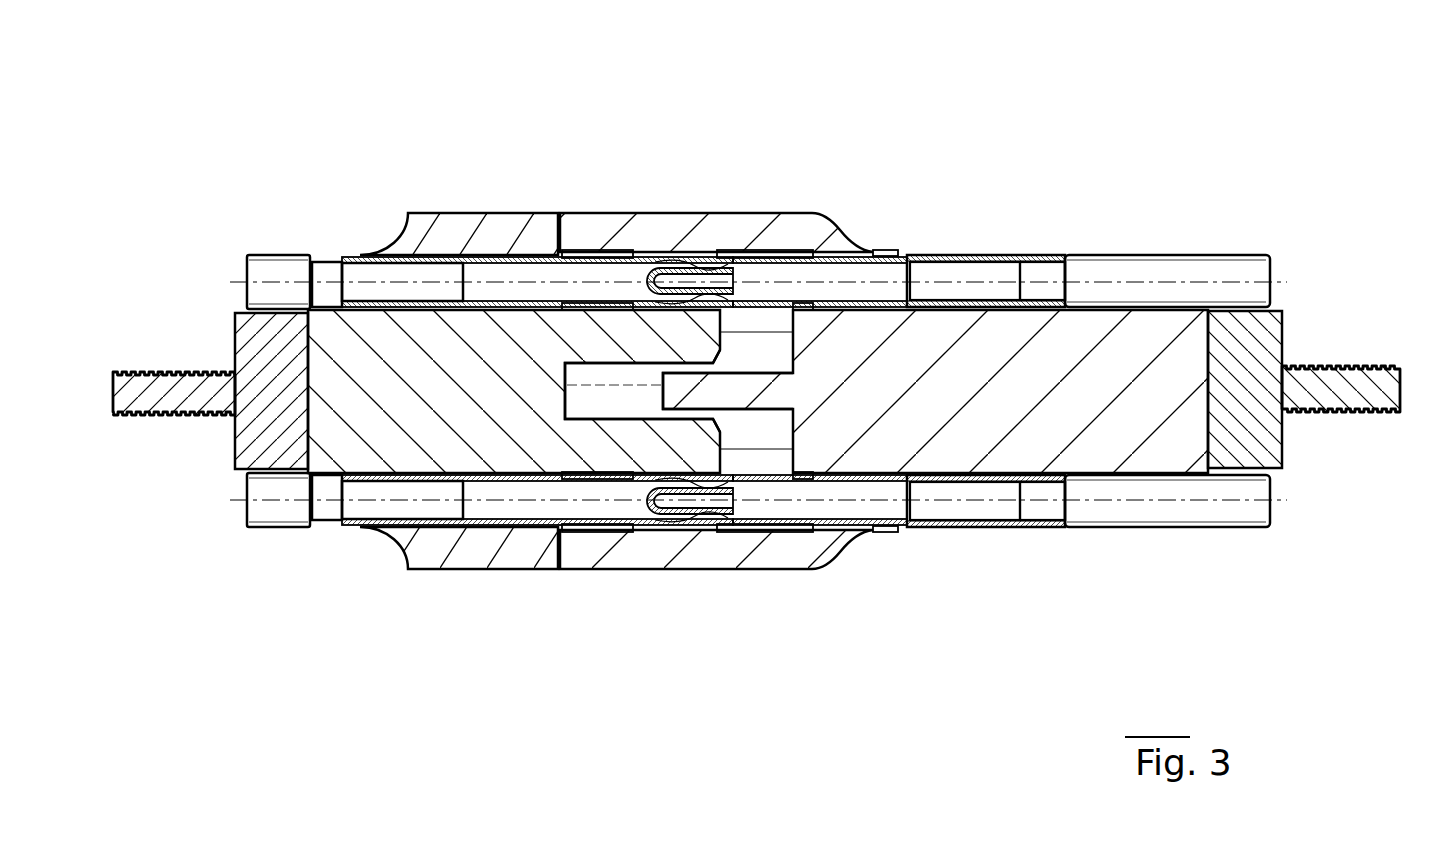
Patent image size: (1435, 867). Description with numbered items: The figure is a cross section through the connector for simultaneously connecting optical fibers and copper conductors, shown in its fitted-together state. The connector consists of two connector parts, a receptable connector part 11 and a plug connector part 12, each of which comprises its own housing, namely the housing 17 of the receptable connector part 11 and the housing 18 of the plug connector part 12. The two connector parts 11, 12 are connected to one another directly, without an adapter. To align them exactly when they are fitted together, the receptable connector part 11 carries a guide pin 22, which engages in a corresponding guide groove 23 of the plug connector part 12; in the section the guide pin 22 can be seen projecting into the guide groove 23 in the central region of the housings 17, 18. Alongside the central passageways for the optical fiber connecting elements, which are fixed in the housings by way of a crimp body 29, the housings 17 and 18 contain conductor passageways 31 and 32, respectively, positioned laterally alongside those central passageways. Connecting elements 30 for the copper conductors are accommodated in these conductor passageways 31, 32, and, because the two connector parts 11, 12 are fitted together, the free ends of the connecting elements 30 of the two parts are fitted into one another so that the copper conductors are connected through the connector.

The receptable connector part 11 is at (977, 243).
The plug connector part 12 is at (468, 203).
The housing 17 is at (1005, 392).
The housing 18 is at (362, 392).
The guide pin 22 is at (738, 390).
The guide groove 23 is at (552, 391).
The crimp body 29 is at (163, 393).
The connecting element for copper conductors 30 is at (537, 277).
The conductor passageway 31 is at (1191, 276).
The conductor passageway 32 is at (278, 287).